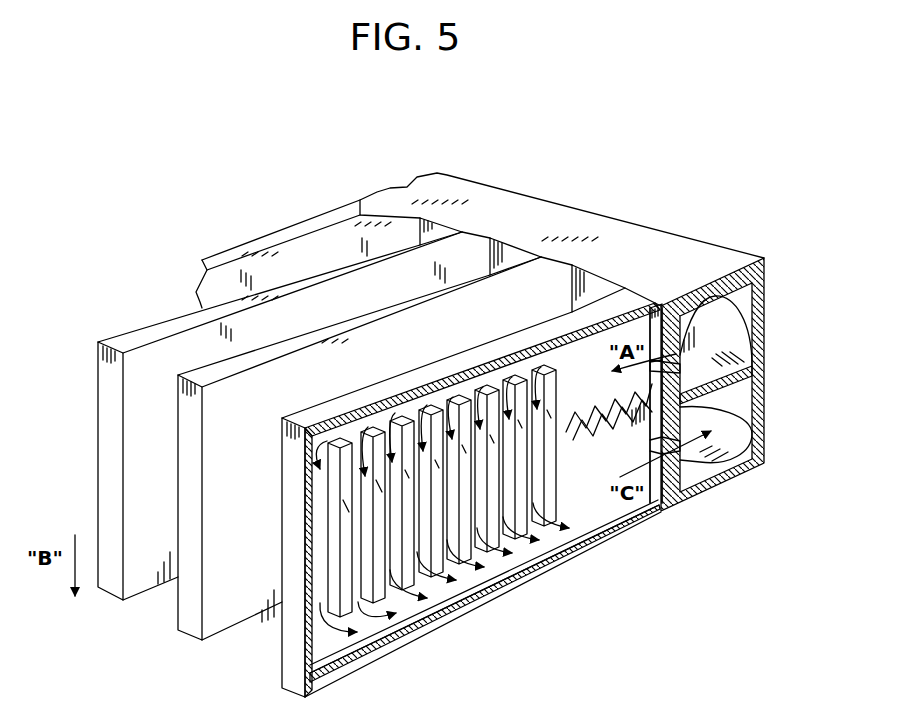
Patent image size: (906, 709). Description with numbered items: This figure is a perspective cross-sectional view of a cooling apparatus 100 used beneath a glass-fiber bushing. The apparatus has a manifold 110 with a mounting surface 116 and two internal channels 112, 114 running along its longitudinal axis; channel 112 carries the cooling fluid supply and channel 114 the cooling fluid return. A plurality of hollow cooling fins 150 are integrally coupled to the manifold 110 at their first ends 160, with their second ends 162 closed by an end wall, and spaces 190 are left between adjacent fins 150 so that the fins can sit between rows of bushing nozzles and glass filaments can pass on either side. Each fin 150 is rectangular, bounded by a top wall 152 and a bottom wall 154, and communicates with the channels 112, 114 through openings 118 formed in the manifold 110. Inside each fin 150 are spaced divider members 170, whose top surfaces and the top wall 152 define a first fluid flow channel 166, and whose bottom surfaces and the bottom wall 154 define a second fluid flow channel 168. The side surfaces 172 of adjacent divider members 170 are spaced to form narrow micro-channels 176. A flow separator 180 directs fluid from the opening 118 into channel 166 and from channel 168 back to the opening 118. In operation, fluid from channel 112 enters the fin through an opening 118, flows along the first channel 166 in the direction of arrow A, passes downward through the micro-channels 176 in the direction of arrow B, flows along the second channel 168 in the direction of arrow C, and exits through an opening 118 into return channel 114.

The cooling apparatus 100 is at (753, 189).
The manifold 110 is at (497, 217).
The internal channel 112 is at (730, 333).
The internal channel 114 is at (720, 413).
The mounting surface 116 is at (604, 290).
The openings 118 is at (678, 353).
The cooling fin 150 is at (112, 415).
The top wall 152 is at (143, 338).
The bottom wall 154 is at (567, 550).
The first end 160 is at (637, 300).
The second end 162 is at (298, 652).
The first fluid flow channel 166 is at (458, 393).
The second fluid flow channel 168 is at (407, 610).
The divider member 170 is at (550, 510).
The side surfaces 172 is at (487, 527).
The micro-channel 176 is at (357, 603).
The flow separator 180 is at (655, 437).
The spaces 190 is at (164, 602).